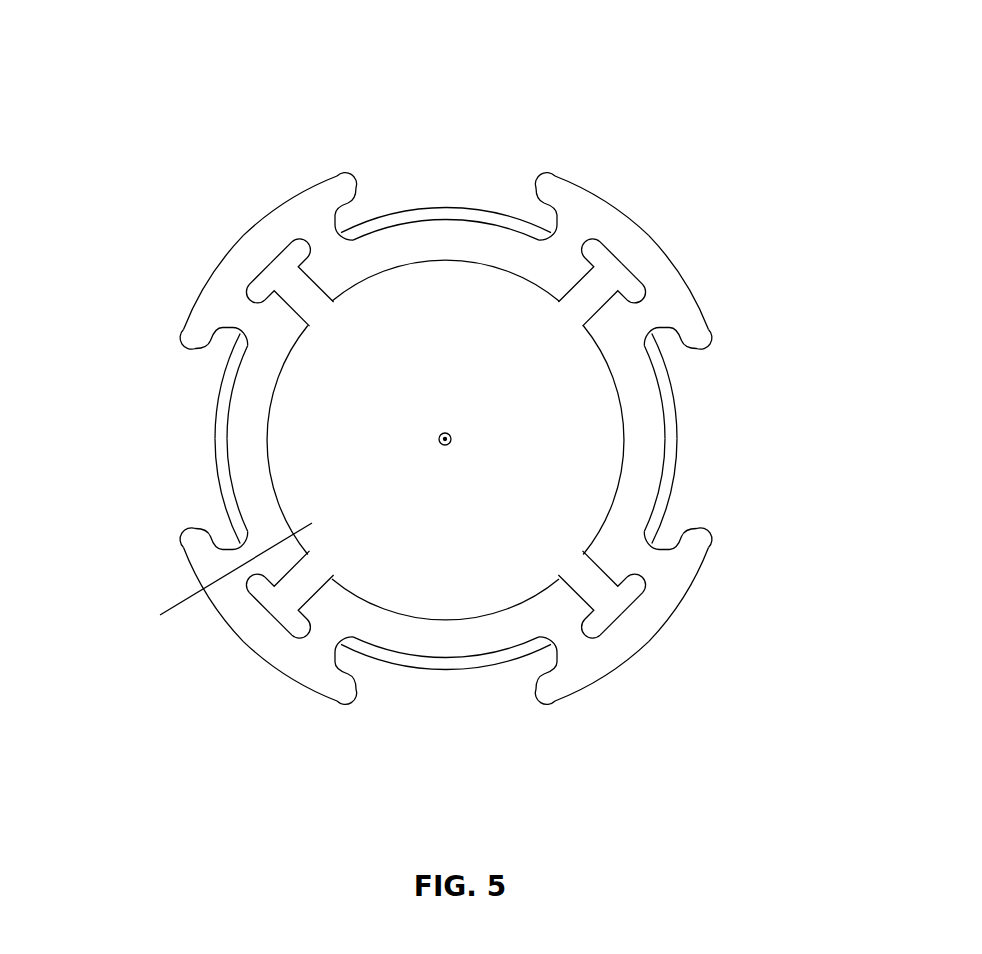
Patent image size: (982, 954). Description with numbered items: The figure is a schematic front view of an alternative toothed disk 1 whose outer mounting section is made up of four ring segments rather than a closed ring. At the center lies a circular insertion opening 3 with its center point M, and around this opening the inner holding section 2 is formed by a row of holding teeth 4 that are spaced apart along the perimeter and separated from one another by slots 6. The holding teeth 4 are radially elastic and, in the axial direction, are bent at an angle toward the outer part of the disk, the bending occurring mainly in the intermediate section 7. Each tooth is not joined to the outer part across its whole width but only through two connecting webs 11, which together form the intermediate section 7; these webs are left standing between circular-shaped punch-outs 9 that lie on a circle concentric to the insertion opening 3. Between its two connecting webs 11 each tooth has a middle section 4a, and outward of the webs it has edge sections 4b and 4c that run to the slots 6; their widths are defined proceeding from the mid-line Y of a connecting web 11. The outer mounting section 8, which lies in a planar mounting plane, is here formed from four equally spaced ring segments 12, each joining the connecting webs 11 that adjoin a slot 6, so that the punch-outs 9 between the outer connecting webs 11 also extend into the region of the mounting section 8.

The toothed disk 1 is at (478, 134).
The holding section 2 is at (514, 263).
The insertion opening 3 is at (392, 326).
The holding teeth 4 is at (438, 243).
The middle section 4a is at (657, 449).
The edge section 4b is at (612, 563).
The edge section 4c is at (602, 316).
The slots 6 is at (589, 296).
The intermediate section 7 is at (573, 228).
The mounting section 8 is at (689, 303).
The punch-outs 9 is at (272, 607).
The connecting webs 11 is at (324, 643).
The ring segments 12 is at (606, 207).
The center point M is at (459, 427).
The mid-line Y is at (183, 599).